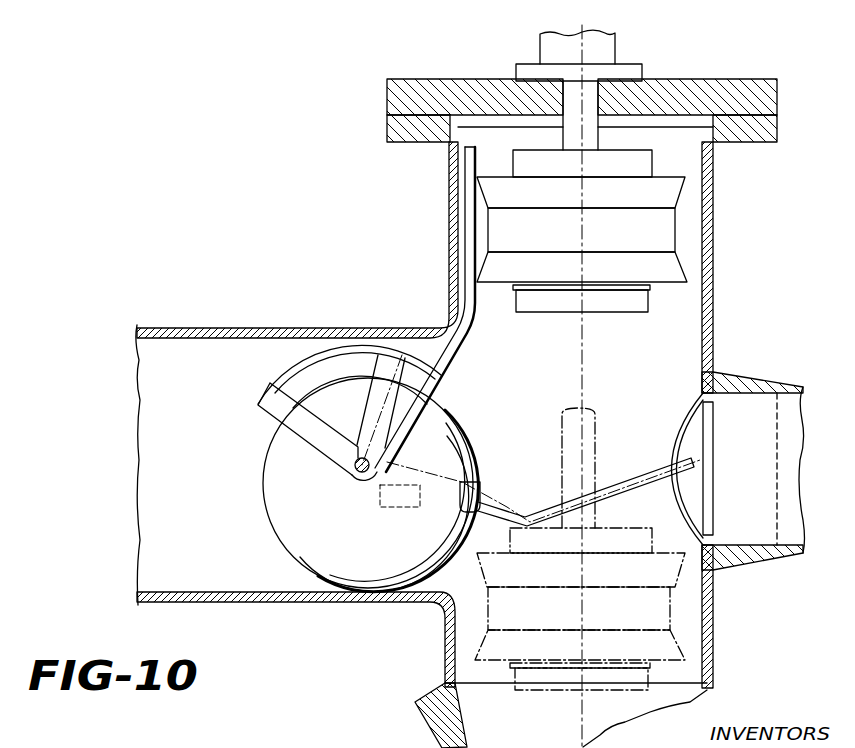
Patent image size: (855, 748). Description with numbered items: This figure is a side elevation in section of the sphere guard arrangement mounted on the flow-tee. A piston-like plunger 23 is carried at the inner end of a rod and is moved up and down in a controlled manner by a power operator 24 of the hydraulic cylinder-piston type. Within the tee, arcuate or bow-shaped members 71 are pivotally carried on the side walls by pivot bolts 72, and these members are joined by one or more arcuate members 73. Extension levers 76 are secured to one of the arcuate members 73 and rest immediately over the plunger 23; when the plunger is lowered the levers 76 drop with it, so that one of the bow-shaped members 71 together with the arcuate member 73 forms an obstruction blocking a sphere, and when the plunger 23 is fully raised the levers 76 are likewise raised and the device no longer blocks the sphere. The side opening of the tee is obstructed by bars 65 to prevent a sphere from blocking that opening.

The plunger 23 is at (635, 305).
The power operator 24 is at (613, 42).
The bars 65 is at (712, 440).
The arcuate or bow-shaped members 71 is at (273, 427).
The pivot bolts 72 is at (357, 477).
The arcuate members 73 is at (290, 368).
The extension levers 76 is at (472, 313).